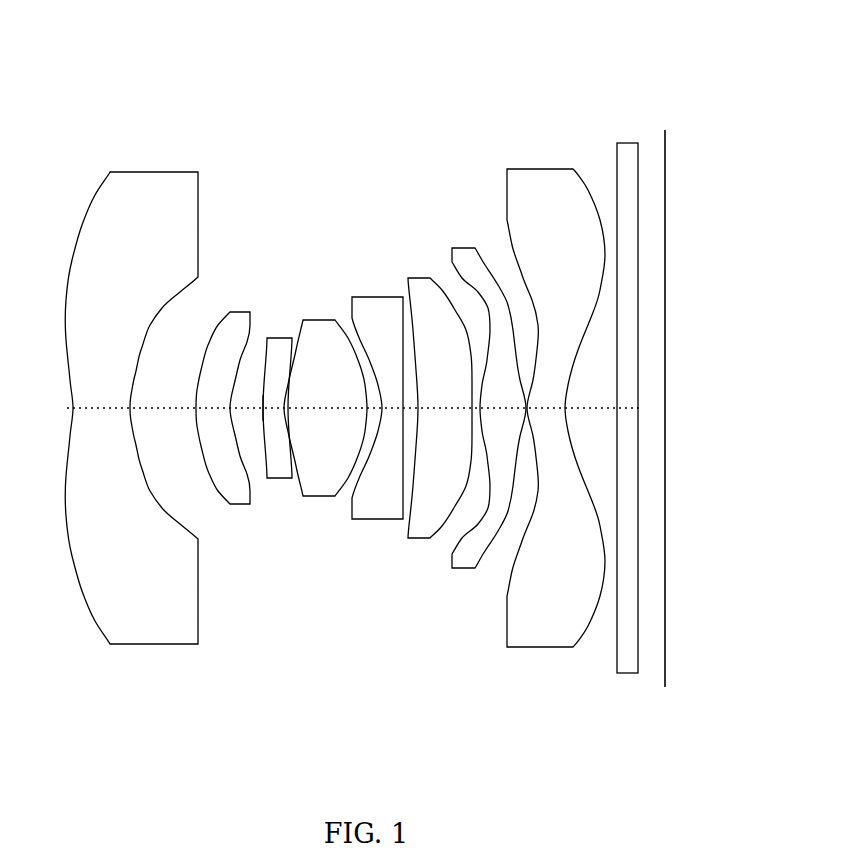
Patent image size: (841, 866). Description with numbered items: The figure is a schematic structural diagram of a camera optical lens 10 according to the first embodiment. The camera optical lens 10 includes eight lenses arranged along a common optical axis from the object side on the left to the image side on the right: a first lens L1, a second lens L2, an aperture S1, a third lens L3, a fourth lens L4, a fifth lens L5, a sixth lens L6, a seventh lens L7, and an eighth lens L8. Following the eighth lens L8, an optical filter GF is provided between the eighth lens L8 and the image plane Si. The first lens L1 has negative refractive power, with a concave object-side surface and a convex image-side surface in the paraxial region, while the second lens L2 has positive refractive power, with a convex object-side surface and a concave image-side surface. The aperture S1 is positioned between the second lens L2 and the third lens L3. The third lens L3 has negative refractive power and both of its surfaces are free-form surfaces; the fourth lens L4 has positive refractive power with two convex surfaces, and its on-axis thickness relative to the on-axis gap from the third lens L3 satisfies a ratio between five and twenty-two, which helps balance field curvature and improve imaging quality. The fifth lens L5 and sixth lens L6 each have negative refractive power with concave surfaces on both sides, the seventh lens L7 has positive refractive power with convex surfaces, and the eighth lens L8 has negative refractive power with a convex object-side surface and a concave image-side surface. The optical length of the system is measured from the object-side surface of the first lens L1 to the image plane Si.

The camera optical lens 10 is at (387, 43).
The first lens L1 is at (131, 389).
The second lens L2 is at (227, 393).
The third lens L3 is at (278, 393).
The fourth lens L4 is at (325, 394).
The fifth lens L5 is at (377, 390).
The sixth lens L6 is at (440, 394).
The seventh lens L7 is at (489, 391).
The eighth lens L8 is at (556, 391).
The aperture S1 is at (266, 438).
The optical filter GF is at (630, 392).
The image plane Si is at (671, 393).